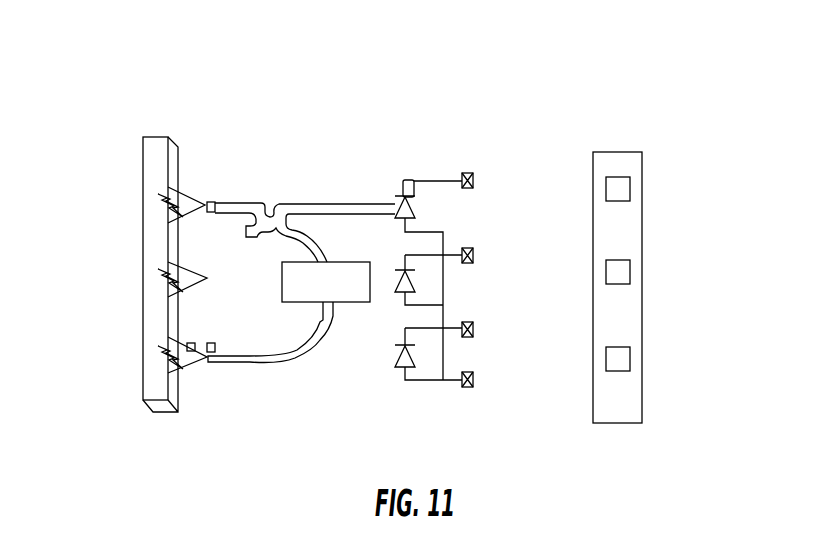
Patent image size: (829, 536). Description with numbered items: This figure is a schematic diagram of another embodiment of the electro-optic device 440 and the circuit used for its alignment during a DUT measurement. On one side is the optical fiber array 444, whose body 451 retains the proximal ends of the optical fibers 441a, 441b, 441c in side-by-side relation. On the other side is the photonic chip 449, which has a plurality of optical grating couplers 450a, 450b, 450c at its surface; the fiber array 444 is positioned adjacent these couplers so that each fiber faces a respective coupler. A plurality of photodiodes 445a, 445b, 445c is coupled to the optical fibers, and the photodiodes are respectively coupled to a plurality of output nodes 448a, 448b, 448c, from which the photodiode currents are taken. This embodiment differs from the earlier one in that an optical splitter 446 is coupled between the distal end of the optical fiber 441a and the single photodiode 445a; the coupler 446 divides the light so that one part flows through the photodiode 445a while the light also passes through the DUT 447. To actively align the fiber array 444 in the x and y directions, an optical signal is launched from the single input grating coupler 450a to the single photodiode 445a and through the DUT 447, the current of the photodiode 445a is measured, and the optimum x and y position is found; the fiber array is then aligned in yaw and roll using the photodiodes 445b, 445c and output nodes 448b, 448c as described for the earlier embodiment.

The electro-optic device 440 is at (455, 70).
The optical fiber array 444 is at (170, 132).
The body 451 is at (153, 148).
The optical fiber 441a is at (160, 213).
The optical fiber 441b is at (173, 288).
The optical fiber 441c is at (177, 370).
The optical splitter 446 is at (277, 210).
The DUT 447 is at (355, 267).
The photodiode 445a is at (412, 178).
The photodiode 445b is at (394, 288).
The photodiode 445c is at (395, 365).
The output node 448a is at (470, 173).
The output node 448b is at (473, 256).
The output node 448c is at (473, 330).
The photonic chip 449 is at (618, 148).
The optical grating coupler 450a is at (617, 190).
The optical grating coupler 450b is at (617, 272).
The optical grating coupler 450c is at (617, 358).